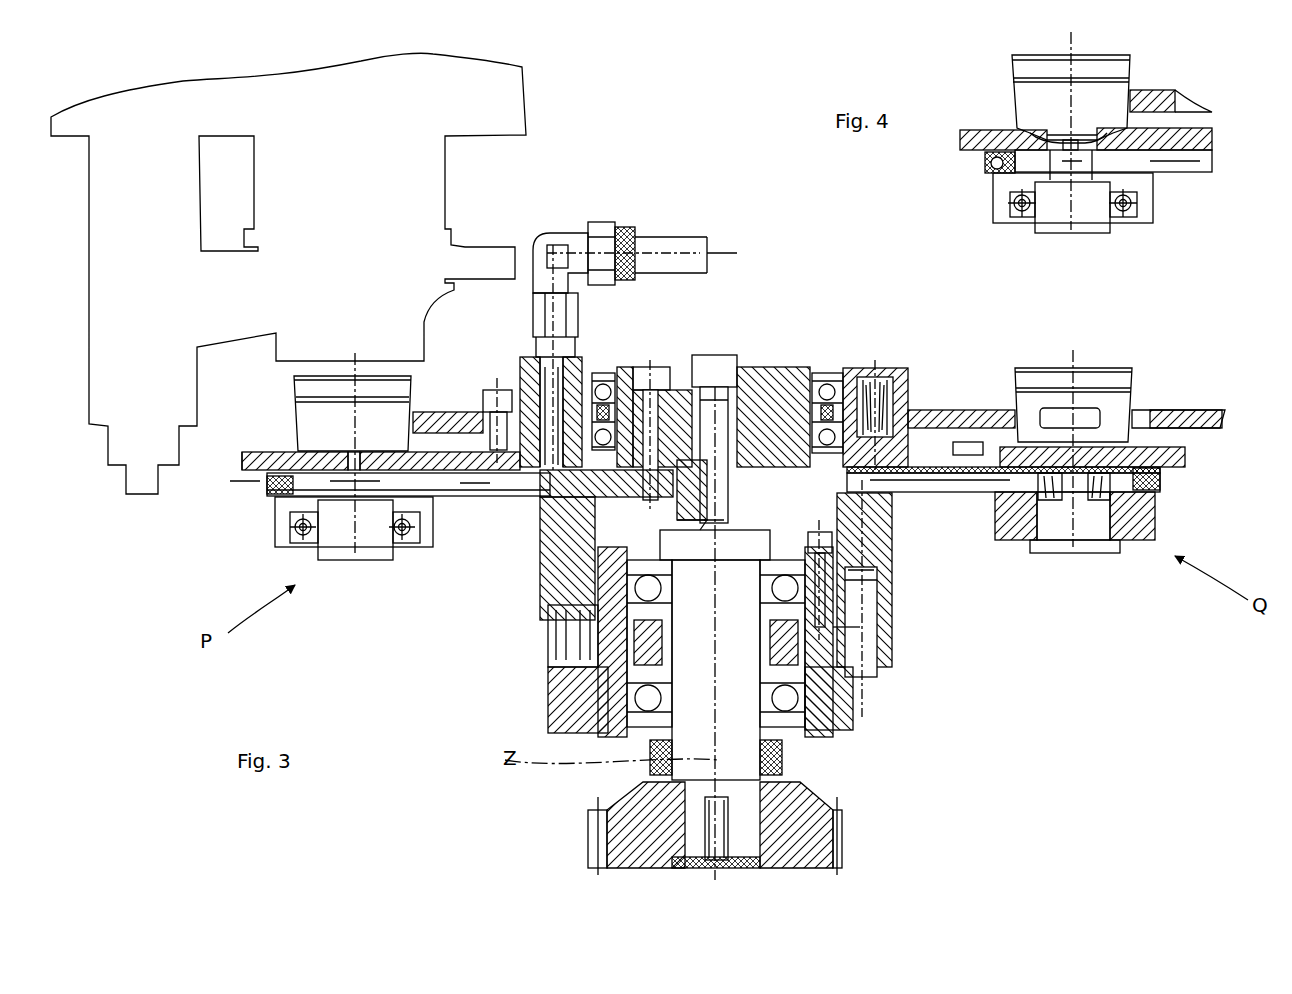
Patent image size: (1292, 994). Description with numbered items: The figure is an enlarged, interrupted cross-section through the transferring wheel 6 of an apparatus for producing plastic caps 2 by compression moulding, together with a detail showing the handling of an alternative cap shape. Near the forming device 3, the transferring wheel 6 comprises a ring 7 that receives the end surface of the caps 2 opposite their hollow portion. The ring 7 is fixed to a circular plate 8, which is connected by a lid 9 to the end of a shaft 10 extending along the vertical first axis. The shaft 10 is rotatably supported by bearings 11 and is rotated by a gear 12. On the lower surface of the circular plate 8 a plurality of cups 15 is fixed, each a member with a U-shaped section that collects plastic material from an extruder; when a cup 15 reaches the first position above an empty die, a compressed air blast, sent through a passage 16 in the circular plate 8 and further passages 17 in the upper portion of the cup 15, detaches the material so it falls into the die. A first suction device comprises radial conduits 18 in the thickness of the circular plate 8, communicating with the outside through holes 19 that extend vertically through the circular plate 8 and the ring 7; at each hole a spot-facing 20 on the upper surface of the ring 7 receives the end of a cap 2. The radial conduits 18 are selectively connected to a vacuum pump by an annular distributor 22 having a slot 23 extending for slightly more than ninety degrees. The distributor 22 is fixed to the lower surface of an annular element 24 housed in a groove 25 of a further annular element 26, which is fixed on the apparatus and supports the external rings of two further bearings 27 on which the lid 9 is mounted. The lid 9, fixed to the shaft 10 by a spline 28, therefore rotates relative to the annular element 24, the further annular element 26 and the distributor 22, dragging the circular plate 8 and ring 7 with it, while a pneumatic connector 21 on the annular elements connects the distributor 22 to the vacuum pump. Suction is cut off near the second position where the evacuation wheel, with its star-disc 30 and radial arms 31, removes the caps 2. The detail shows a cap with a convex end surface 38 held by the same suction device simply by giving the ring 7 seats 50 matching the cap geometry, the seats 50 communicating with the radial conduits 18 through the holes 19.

In FIG. 3, the cap 2 is at (297, 437).
In FIG. 4, the cap 2 is at (1093, 70).
In FIG. 3, the forming device 3 is at (361, 334).
In FIG. 3, the transferring wheel 6 is at (418, 662).
In FIG. 3, the ring 7 is at (245, 476).
In FIG. 4, the ring 7 is at (963, 135).
In FIG. 3, the circular plate 8 is at (937, 493).
In FIG. 4, the circular plate 8 is at (980, 168).
In FIG. 3, the lid 9 is at (777, 367).
In FIG. 3, the shaft 10 is at (752, 669).
In FIG. 3, the bearings 11 is at (798, 605).
In FIG. 3, the gear 12 is at (797, 807).
In FIG. 3, the cup 15 is at (428, 538).
In FIG. 4, the cup 15 is at (1142, 215).
In FIG. 3, the passage 16 is at (968, 480).
In FIG. 3, the further passages 17 is at (1062, 495).
In FIG. 3, the radial conduits 18 is at (487, 487).
In FIG. 4, the radial conduits 18 is at (1163, 163).
In FIG. 3, the through holes 19 is at (300, 455).
In FIG. 4, the through holes 19 is at (1063, 143).
In FIG. 3, the spot-facing 20 is at (380, 453).
In FIG. 4, the spot-facing 20 is at (1087, 143).
In FIG. 3, the pneumatic connector 21 is at (568, 237).
In FIG. 3, the distributor 22 is at (883, 465).
In FIG. 3, the slot 23 is at (523, 500).
In FIG. 3, the annular element 24 is at (900, 427).
In FIG. 3, the groove 25 is at (913, 447).
In FIG. 3, the further annular element 26 is at (893, 397).
In FIG. 3, the further bearings 27 is at (607, 437).
In FIG. 3, the spline 28 is at (752, 417).
In FIG. 3, the star-disc 30 is at (1207, 417).
In FIG. 3, the radial arms 31 is at (1053, 385).
In FIG. 4, the centering element 38 is at (1030, 137).
In FIG. 4, the seats 50 is at (1107, 127).